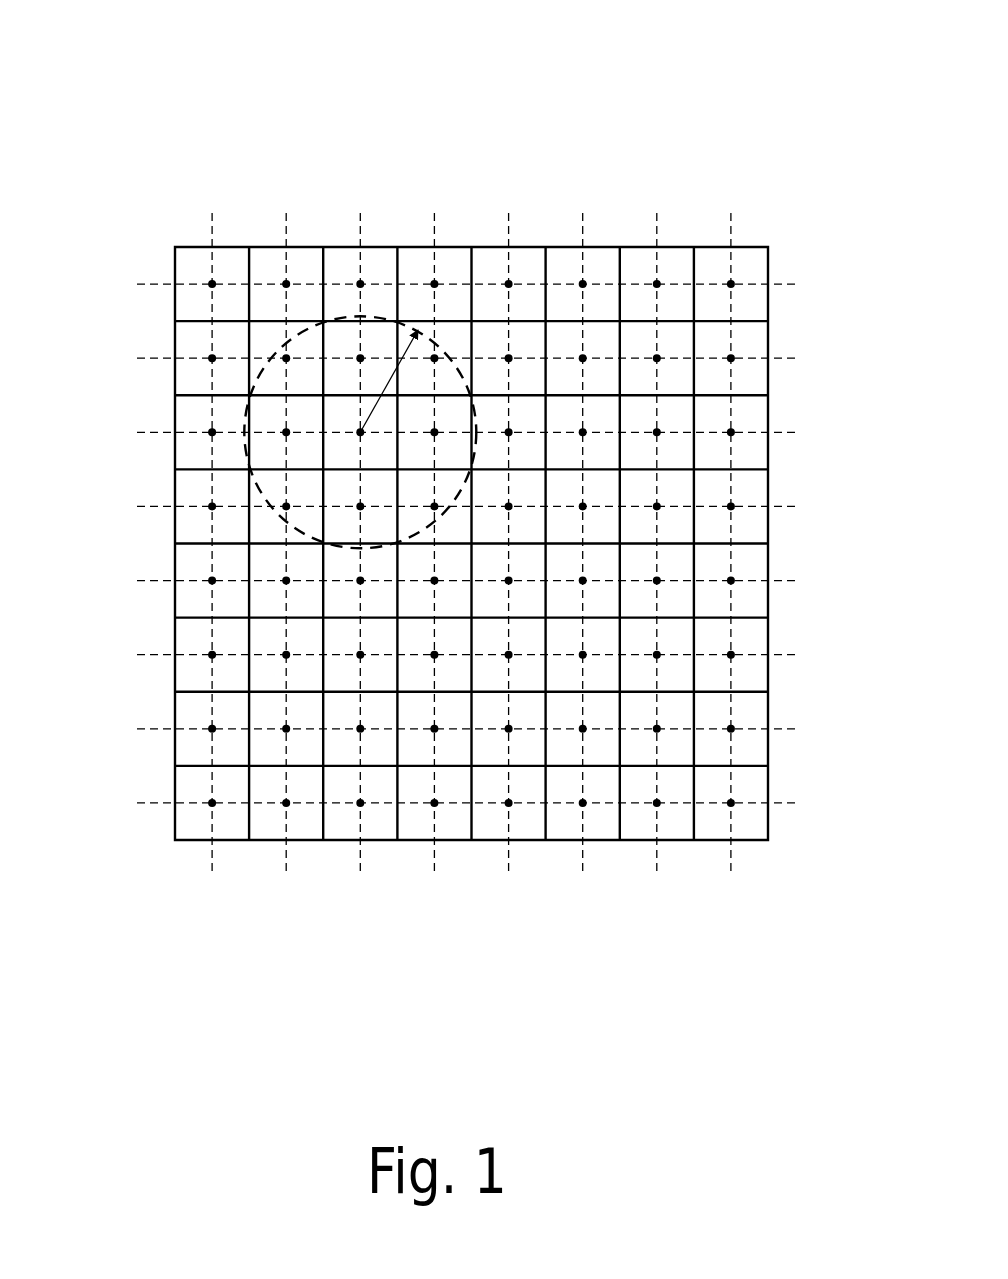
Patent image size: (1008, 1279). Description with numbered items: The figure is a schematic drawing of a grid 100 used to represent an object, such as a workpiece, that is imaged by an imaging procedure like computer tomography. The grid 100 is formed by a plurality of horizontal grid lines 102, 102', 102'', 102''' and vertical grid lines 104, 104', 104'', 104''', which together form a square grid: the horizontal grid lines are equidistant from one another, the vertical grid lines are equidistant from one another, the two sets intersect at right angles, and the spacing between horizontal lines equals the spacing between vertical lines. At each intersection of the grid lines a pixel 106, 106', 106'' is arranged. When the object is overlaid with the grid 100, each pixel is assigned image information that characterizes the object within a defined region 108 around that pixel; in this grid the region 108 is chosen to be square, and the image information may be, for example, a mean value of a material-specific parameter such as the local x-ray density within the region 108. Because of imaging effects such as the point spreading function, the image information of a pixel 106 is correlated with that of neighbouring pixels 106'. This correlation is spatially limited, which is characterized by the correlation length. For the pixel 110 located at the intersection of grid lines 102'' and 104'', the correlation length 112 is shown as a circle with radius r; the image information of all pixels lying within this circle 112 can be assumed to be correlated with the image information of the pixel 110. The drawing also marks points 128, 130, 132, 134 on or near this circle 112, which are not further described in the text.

The grid 100 is at (465, 485).
The horizontal grid line 102 is at (508, 236).
The horizontal grid line 102' is at (511, 310).
The horizontal grid line 102'' is at (515, 384).
The horizontal grid line 102''' is at (519, 458).
The vertical grid line 104 is at (189, 587).
The vertical grid line 104' is at (266, 587).
The vertical grid line 104'' is at (344, 587).
The vertical grid line 104''' is at (424, 587).
The pixel 106 is at (246, 195).
The pixel 106' is at (335, 190).
The pixel 106'' is at (422, 188).
The region 108 is at (193, 245).
The pixel 110 is at (360, 432).
The correlation length 112 is at (243, 422).
The neighbouring detector element 128 is at (286, 358).
The neighbouring detector element on circle 130 is at (433, 357).
The neighbouring detector element 132 is at (434, 506).
The neighbouring detector element 134 is at (287, 510).